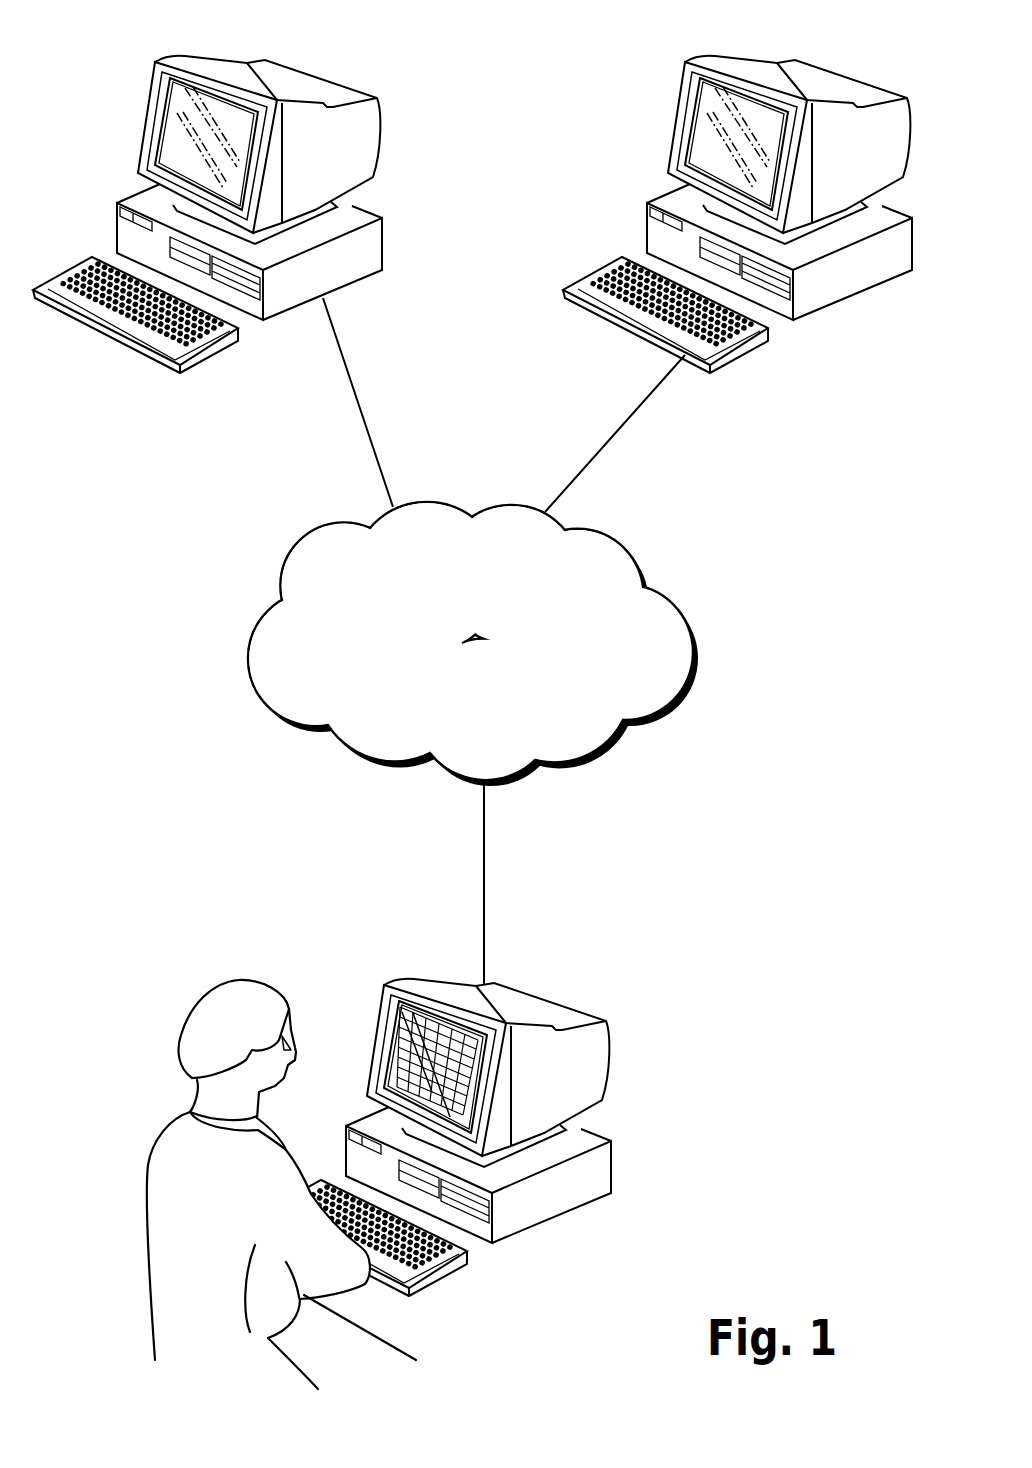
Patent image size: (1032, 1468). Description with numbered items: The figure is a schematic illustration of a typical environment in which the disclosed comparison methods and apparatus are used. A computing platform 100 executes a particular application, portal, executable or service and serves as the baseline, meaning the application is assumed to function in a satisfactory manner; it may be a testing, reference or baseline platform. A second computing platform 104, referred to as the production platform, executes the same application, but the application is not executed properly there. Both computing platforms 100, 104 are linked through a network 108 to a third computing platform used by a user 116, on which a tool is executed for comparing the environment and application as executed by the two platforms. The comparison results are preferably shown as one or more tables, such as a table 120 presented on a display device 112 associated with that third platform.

The computing platform 100 is at (384, 216).
The second computing platform 104 is at (813, 312).
The network 108 is at (660, 595).
The display device 112 is at (573, 1008).
The user 116 is at (178, 1020).
The table 120 is at (389, 998).